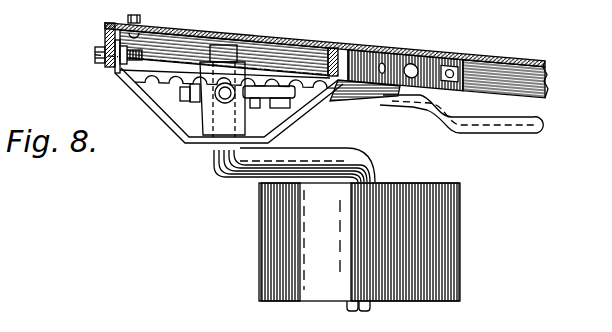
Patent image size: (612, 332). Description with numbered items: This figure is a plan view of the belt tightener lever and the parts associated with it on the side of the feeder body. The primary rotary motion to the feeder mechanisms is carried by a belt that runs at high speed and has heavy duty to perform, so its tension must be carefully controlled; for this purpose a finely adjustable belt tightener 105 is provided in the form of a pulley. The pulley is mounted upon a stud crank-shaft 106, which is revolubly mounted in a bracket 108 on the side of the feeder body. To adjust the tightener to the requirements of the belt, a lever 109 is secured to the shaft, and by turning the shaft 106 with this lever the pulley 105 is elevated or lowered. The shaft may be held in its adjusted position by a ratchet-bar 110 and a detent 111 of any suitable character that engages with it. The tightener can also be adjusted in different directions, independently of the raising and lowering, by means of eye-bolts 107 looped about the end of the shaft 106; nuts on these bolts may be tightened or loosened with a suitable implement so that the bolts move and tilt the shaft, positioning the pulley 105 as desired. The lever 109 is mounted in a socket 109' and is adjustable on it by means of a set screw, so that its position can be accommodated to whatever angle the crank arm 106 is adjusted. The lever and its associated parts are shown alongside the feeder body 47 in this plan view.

The rail 47 is at (337, 43).
The belt tightener 105 is at (461, 218).
The stud crank-shaft 106 is at (363, 158).
The eye-bolt 107 is at (94, 56).
The bracket 108 is at (158, 115).
The lever 109 is at (365, 103).
The socket 109' is at (212, 123).
The ratchet-bar 110 is at (281, 73).
The detent 111 is at (410, 104).